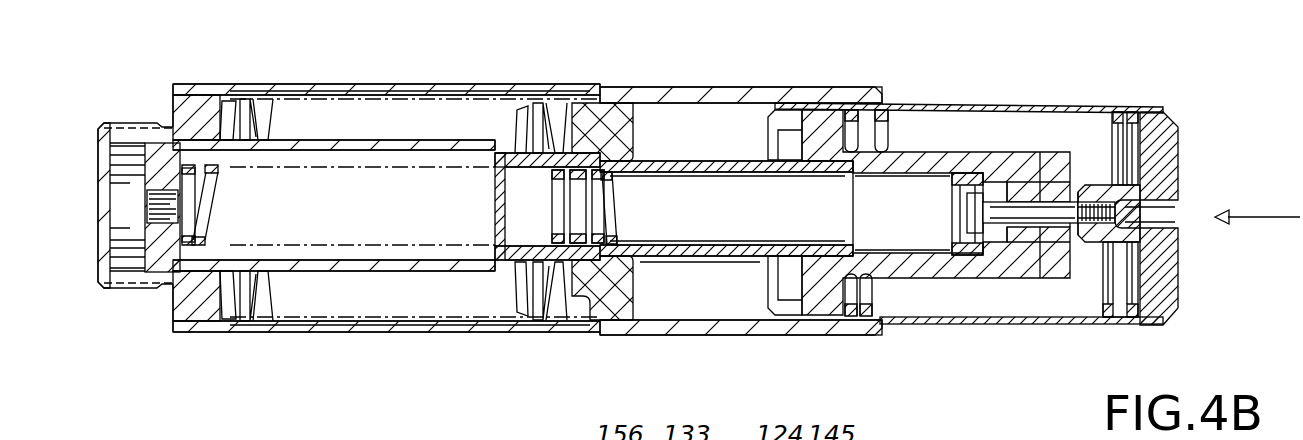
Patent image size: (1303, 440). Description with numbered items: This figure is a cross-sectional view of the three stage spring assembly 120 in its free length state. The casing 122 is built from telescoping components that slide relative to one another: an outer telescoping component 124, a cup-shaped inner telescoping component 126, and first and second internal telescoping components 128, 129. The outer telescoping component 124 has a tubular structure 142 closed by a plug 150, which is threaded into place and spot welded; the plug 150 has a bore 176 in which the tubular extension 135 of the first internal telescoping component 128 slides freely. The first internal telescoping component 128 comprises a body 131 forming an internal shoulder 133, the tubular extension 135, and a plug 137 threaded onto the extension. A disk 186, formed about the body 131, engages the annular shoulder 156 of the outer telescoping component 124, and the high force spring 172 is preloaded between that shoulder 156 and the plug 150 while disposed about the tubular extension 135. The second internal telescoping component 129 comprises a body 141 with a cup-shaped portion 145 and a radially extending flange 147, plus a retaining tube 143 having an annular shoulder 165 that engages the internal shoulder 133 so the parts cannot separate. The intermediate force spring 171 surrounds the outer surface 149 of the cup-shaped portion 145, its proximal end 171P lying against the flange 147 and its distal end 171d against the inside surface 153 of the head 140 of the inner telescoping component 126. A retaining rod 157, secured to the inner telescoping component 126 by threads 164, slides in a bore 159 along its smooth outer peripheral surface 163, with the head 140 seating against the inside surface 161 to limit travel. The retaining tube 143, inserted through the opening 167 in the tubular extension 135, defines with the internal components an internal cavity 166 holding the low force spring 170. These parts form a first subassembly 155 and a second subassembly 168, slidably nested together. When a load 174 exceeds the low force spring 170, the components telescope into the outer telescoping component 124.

The three stage spring assembly 120 is at (108, 338).
The casing 122 is at (355, 80).
The outer telescoping component 124 is at (798, 80).
The inner telescoping component 126 is at (1062, 94).
The first internal telescoping component 128 is at (642, 308).
The second internal telescoping component 129 is at (916, 140).
The body 131 is at (648, 120).
The internal shoulder 133 is at (648, 150).
The tubular extension 135 is at (400, 143).
The plug 137 is at (160, 160).
The head 140 is at (1163, 128).
The body 141 is at (995, 193).
The tubular structure 142 is at (397, 90).
The retaining tube 143 is at (723, 258).
The cup-shaped portion 145 is at (935, 155).
The radially extending flange 147 is at (783, 116).
The outer surface 149 is at (1063, 220).
The plug 150 is at (200, 102).
The inside surface 153 is at (1143, 160).
The first subassembly 155 is at (922, 338).
The annular shoulder 156 is at (605, 122).
The retaining rod 157 is at (1050, 235).
The bore 159 is at (1017, 240).
The inside surface 161 is at (1005, 173).
The outer peripheral surface 163 is at (1073, 192).
The threads 164 is at (1086, 244).
The annular shoulder 165 is at (578, 168).
The internal cavity 166 is at (482, 193).
The opening 167 is at (120, 236).
The second subassembly 168 is at (668, 158).
The low force spring 170 is at (200, 243).
The intermediate force spring 171 is at (1134, 112).
The proximal end 171P is at (893, 96).
The distal end 171d is at (1117, 96).
The high force spring 172 is at (553, 315).
The load 174 is at (1280, 219).
The bore 176 is at (118, 181).
The disk 186 is at (590, 108).